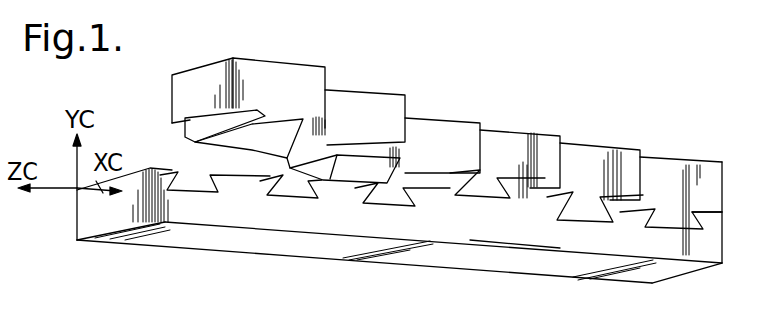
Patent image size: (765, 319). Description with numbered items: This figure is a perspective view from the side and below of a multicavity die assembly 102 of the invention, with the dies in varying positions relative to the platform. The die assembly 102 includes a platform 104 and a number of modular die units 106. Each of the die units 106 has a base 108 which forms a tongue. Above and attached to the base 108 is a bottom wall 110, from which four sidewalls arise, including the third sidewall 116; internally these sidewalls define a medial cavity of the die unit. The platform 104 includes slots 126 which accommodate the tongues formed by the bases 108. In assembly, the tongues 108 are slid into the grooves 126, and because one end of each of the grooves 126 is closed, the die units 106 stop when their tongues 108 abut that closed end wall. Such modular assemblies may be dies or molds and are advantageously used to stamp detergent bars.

The die assembly 102 is at (344, 268).
The platform 104 is at (526, 232).
The modular die units 106 is at (318, 78).
The base 108 is at (198, 132).
The bottom wall 110 is at (184, 80).
The third sidewall 116 is at (450, 137).
The slots 126 is at (176, 174).